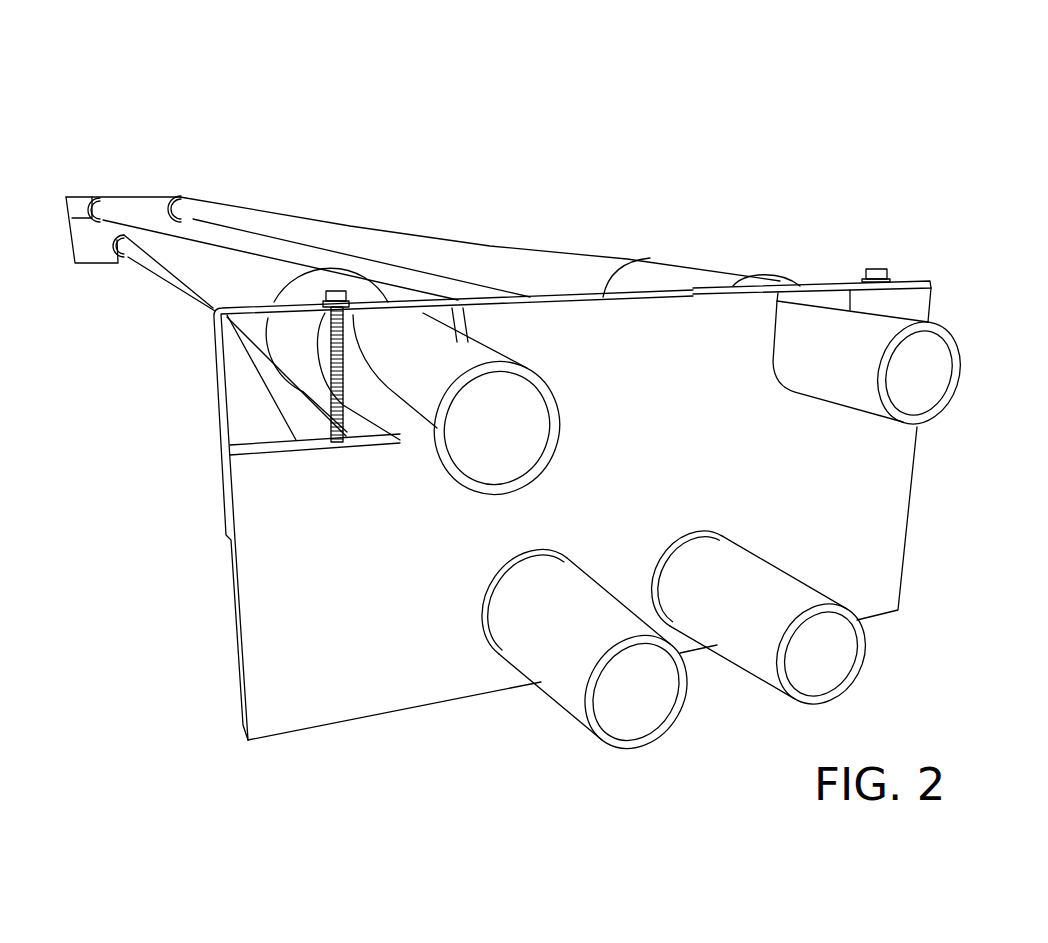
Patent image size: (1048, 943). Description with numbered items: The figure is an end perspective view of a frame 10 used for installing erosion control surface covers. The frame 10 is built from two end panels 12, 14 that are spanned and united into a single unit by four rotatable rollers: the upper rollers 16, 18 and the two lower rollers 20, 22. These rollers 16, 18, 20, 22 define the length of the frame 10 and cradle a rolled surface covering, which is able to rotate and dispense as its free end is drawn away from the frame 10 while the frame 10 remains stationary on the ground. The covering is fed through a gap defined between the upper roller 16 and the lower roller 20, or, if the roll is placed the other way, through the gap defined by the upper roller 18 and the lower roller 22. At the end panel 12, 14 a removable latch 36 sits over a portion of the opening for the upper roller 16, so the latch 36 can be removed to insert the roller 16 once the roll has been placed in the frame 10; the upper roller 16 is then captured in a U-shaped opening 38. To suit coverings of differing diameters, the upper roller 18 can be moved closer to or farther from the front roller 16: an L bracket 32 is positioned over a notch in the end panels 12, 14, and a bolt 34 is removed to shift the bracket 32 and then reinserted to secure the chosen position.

The frame 10 is at (512, 128).
The end panel 12 is at (150, 205).
The end panel 14 is at (288, 624).
The upper roller 16 is at (283, 227).
The upper roller 18 is at (143, 236).
The lower rotatable roller 20 is at (807, 590).
The lower rotatable roller 22 is at (190, 317).
The L bracket 32 is at (88, 198).
The bolt 34 is at (90, 197).
The removable latch 36 is at (193, 197).
The U-shaped opening 38 is at (840, 302).